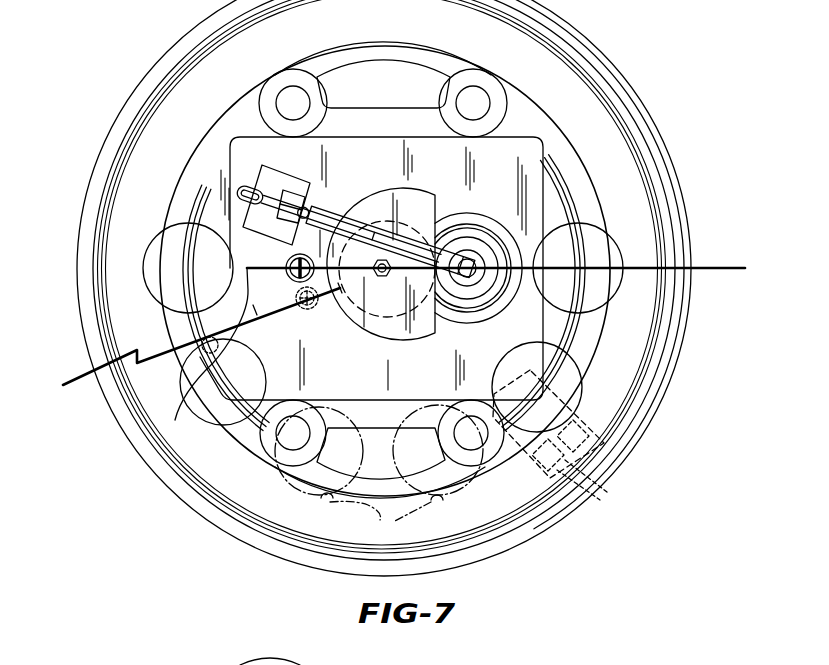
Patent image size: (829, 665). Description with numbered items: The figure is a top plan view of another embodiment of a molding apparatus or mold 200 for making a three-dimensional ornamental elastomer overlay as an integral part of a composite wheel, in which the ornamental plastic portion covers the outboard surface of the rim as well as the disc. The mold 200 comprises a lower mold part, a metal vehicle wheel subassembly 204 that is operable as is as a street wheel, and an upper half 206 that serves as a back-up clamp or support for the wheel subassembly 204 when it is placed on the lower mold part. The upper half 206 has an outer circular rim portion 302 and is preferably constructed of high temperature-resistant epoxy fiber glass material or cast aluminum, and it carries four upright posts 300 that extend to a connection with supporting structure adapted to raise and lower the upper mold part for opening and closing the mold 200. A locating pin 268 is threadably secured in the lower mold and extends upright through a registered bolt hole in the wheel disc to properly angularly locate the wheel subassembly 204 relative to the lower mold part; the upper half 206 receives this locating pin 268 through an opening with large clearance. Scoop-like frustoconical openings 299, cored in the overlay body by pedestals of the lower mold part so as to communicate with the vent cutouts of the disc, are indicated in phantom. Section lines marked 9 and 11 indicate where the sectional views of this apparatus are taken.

The molding apparatus 200 is at (102, 115).
The metal vehicle wheel subassembly 204 is at (657, 123).
The upper half 206 is at (544, 103).
The upright posts 300 is at (480, 95).
The scoop-like frustoconical opening 299 is at (400, 519).
The outer circular rim portion 302 is at (598, 350).
The locating pin 268 is at (290, 250).
The section line 9- 9 is at (737, 268).
The section line 11- 11 is at (259, 286).